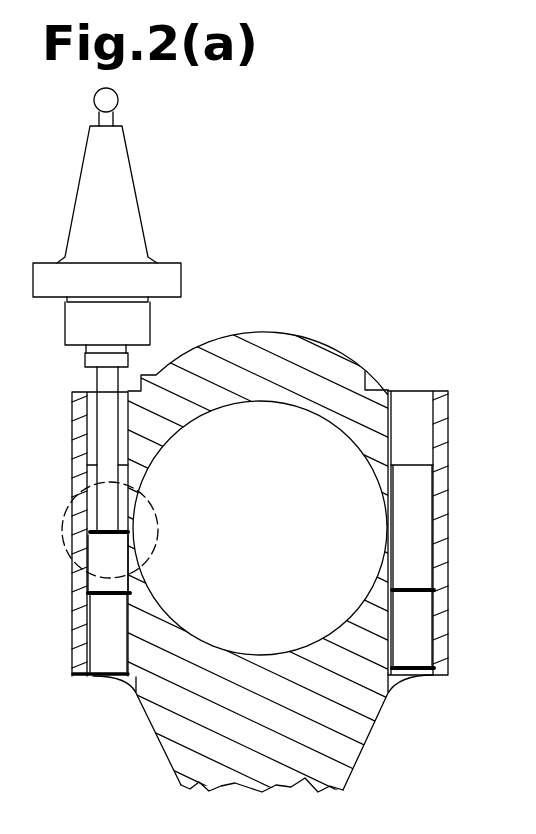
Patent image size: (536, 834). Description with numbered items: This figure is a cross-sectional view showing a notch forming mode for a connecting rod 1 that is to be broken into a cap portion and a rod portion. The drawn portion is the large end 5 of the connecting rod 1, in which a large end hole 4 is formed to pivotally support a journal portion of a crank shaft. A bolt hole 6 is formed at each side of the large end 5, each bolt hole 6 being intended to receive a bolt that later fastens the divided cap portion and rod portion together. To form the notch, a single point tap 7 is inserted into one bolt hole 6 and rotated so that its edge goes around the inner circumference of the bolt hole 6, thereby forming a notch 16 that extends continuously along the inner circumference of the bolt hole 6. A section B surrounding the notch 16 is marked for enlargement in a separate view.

The connecting rod 1 is at (68, 410).
The large end hole 4 is at (340, 430).
The large end 5 is at (310, 345).
The bolt hole 6 is at (94, 616).
The single point tap 7 is at (92, 426).
The notch 16 is at (133, 534).
The section B is at (63, 523).